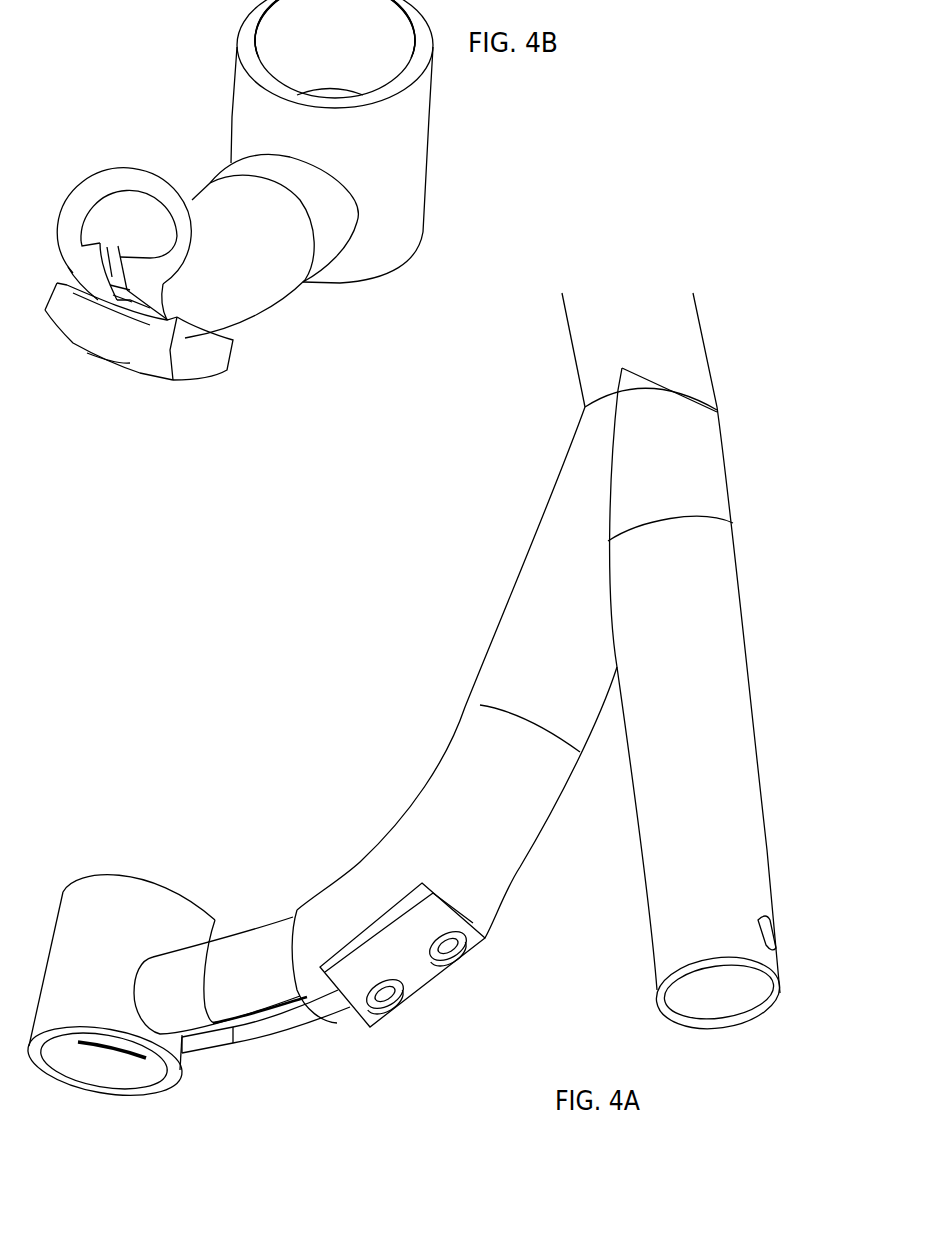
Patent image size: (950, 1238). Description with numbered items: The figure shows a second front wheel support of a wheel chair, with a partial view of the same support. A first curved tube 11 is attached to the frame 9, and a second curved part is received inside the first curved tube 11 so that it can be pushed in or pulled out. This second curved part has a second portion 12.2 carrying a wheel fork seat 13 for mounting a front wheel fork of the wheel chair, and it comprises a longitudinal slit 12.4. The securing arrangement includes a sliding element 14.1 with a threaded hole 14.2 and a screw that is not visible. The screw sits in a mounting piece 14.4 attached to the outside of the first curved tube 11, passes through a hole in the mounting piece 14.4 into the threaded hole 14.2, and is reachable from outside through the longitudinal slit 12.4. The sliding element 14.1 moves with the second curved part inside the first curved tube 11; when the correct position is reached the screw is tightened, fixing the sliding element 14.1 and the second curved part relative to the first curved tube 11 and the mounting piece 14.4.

In FIG. 4A, the frame 9 is at (722, 580).
In FIG. 4A, the first curved tube 11 is at (515, 855).
In FIG. 4B, the wheel fork seat 13 is at (410, 168).
In FIG. 4A, the wheel fork seat 13 is at (125, 892).
In FIG. 4A, the second portion 12.2 is at (190, 976).
In FIG. 4A, the longitudinal slit 12.4 is at (273, 1017).
In FIG. 4B, the sliding element 14.1 is at (118, 253).
In FIG. 4B, the threaded hole 14.2 is at (111, 314).
In FIG. 4B, the mounting piece 14.4 is at (182, 376).
In FIG. 4A, the mounting piece 14.4 is at (423, 983).